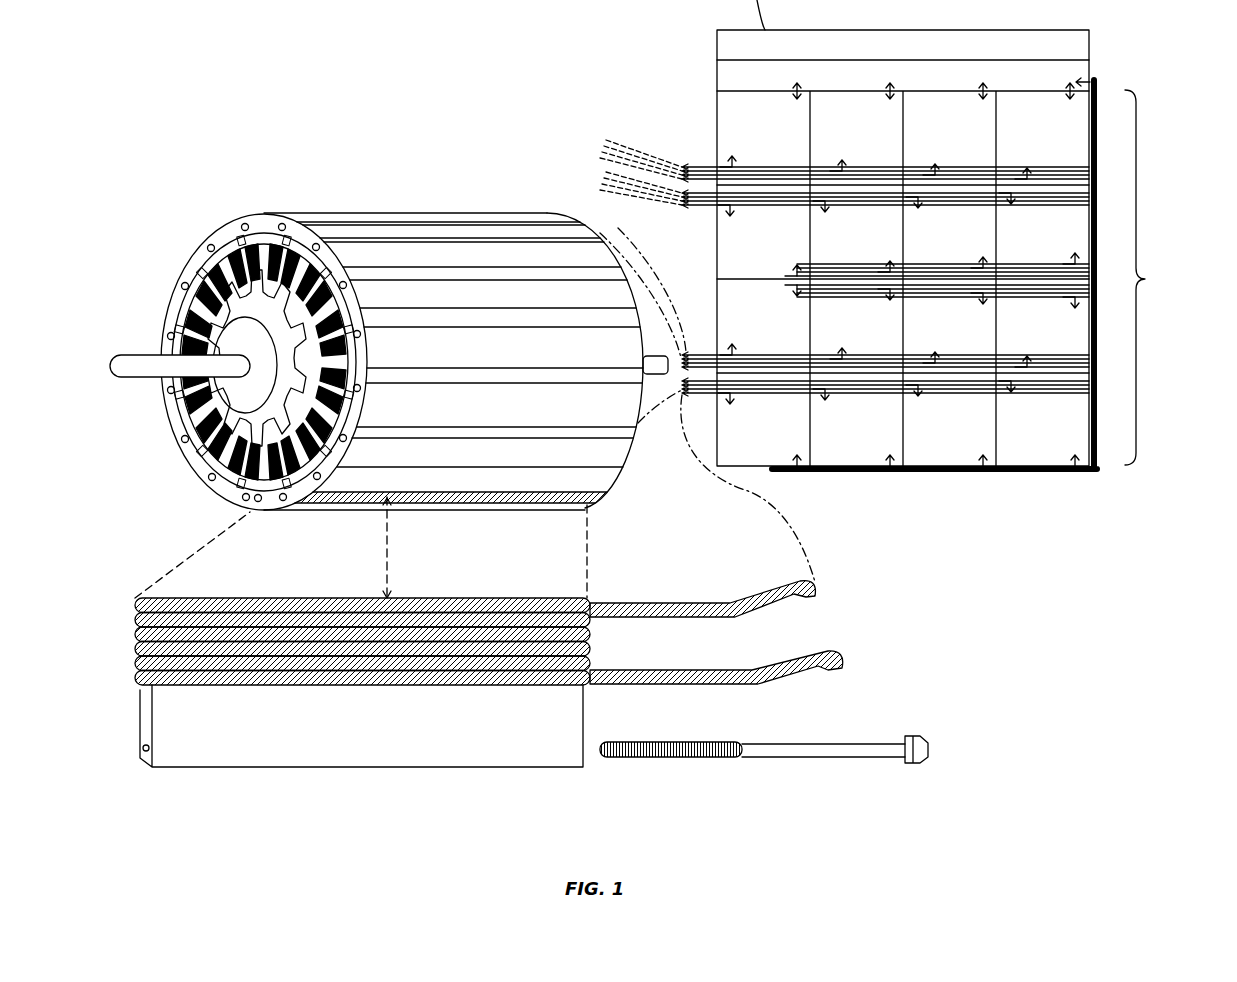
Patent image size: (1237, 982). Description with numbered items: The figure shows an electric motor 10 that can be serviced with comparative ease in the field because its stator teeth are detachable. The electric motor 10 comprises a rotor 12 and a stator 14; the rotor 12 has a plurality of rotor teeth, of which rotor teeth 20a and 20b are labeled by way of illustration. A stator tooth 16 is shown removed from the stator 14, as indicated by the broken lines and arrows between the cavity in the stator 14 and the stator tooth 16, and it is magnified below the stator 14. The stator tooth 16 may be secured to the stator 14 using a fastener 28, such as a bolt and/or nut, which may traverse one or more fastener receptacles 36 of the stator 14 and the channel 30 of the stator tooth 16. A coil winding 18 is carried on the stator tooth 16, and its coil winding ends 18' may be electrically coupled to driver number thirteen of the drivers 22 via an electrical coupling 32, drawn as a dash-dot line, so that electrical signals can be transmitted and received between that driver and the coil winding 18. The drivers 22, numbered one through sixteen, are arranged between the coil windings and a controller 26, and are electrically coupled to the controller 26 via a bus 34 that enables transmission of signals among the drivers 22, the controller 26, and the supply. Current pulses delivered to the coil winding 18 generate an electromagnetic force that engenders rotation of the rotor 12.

The electric motor 10 is at (299, 169).
The rotor 12 is at (178, 253).
The stator 14 is at (356, 230).
The stator tooth 16 is at (545, 598).
The coil winding 18 is at (469, 641).
The coil winding ends 18' is at (780, 613).
The rotor tooth 20a is at (206, 452).
The rotor tooth 20b is at (350, 432).
The drivers 22 is at (1142, 279).
The controller 26 is at (716, 78).
The fastener 28 is at (835, 758).
The channel 30 is at (144, 752).
The electrical coupling 32 is at (600, 213).
The bus 34 is at (1099, 462).
The fastener receptacle 36 is at (262, 502).